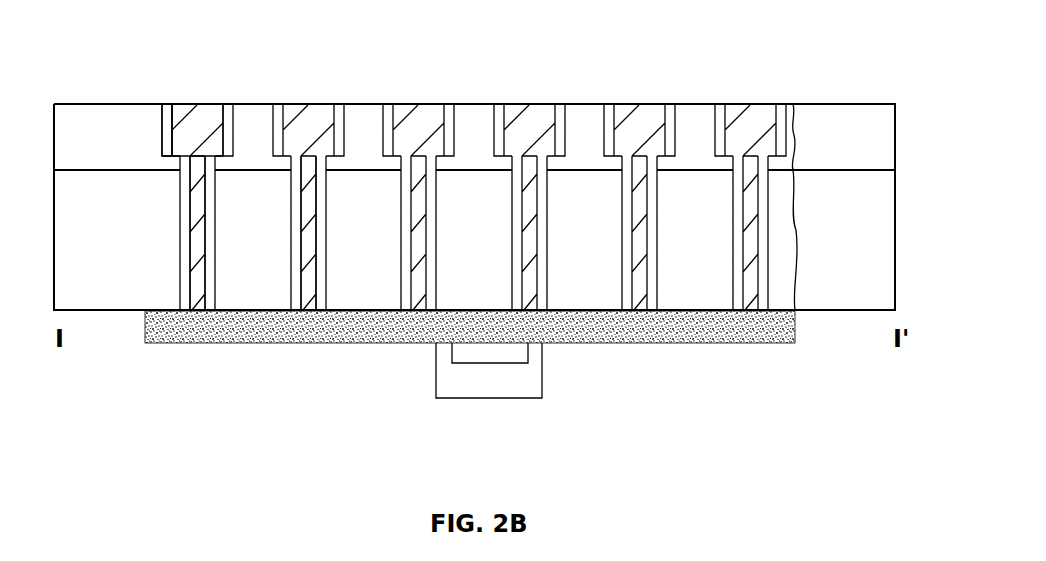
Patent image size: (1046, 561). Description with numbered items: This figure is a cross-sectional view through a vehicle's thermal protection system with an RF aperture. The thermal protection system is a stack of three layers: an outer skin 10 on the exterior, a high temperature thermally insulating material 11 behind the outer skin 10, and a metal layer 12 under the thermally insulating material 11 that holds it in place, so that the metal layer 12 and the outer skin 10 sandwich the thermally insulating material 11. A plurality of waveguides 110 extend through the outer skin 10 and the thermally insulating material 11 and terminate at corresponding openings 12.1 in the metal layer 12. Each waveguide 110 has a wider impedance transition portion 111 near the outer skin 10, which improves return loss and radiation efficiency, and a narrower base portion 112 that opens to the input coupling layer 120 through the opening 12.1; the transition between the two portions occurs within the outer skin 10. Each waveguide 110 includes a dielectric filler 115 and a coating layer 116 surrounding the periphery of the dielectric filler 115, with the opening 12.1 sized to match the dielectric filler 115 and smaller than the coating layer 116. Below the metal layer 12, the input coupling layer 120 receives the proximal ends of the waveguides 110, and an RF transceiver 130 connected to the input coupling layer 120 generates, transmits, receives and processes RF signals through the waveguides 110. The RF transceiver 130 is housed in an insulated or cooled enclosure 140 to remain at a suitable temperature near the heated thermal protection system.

The outer skin 10 is at (880, 126).
The thermally insulating material 11 is at (880, 270).
The metal layer 12 is at (868, 311).
The opening 12.1 is at (193, 309).
The waveguide 110 is at (212, 93).
The impedance transition portion 111 is at (795, 128).
The base portion 112 is at (797, 230).
The dielectric filler 115 is at (178, 143).
The coating layer 116 is at (167, 115).
The input coupling layer 120 is at (748, 343).
The RF transceiver 130 is at (528, 352).
The enclosure 140 is at (535, 398).